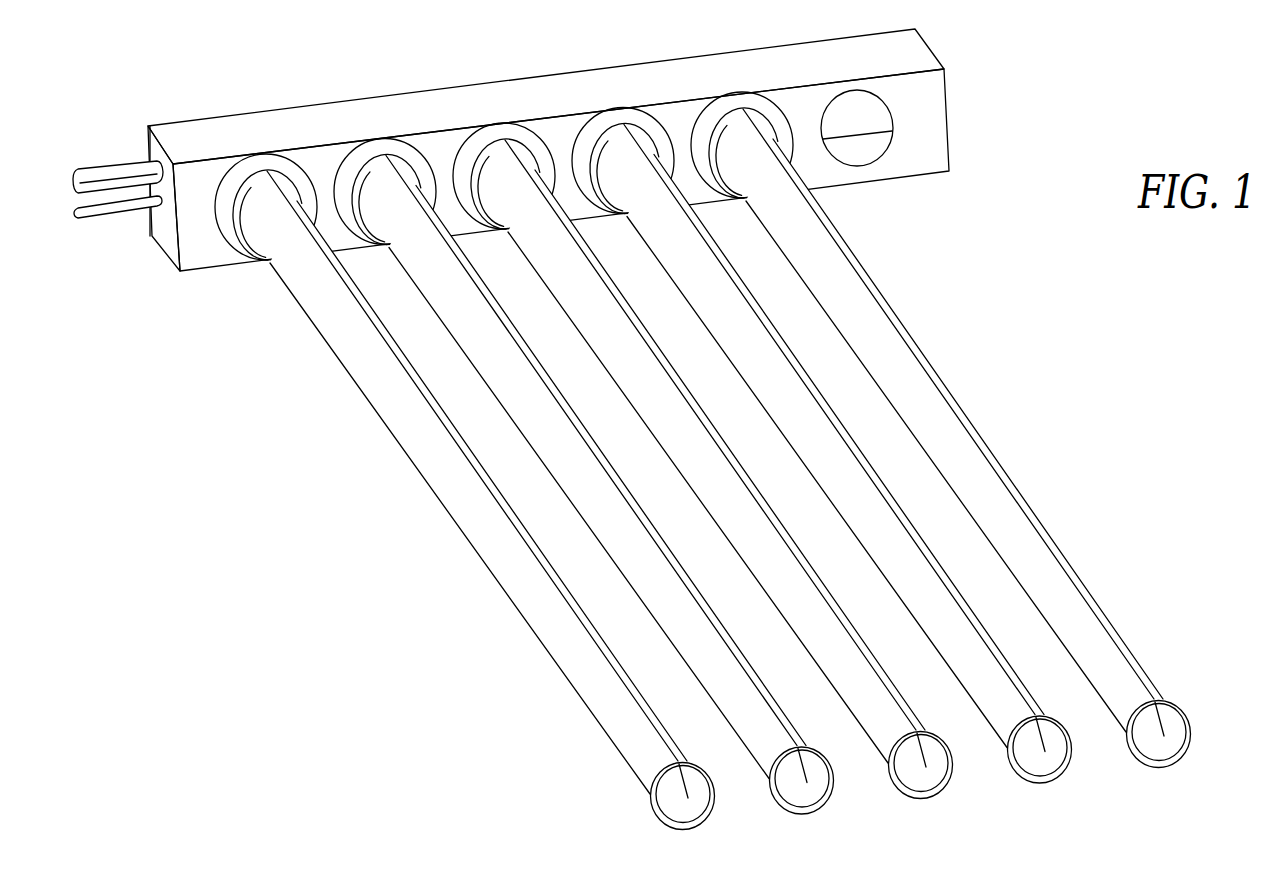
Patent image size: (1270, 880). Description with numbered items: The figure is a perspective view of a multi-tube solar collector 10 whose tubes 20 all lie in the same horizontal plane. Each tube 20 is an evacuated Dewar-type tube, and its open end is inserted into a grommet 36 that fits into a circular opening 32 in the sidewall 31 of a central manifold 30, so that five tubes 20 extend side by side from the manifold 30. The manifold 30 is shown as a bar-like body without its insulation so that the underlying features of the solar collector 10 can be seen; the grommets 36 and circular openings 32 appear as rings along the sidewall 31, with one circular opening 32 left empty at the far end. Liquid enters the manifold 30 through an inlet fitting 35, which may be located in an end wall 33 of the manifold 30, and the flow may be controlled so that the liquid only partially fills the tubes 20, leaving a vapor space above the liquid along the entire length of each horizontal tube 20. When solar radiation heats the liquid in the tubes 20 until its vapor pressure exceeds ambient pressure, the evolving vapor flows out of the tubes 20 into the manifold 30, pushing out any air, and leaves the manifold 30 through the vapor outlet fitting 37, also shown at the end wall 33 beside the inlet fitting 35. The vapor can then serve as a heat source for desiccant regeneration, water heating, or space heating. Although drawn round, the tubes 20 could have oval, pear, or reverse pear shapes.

The multi-tube solar collector 10 is at (922, 311).
The tubes 20 is at (536, 638).
The central manifold 30 is at (559, 201).
The sidewall 31 is at (200, 252).
The circular opening 32 is at (874, 110).
The end wall 33 is at (165, 236).
The inlet fitting 35 is at (113, 217).
The grommet 36 is at (237, 254).
The vapor outlet fitting 37 is at (110, 160).